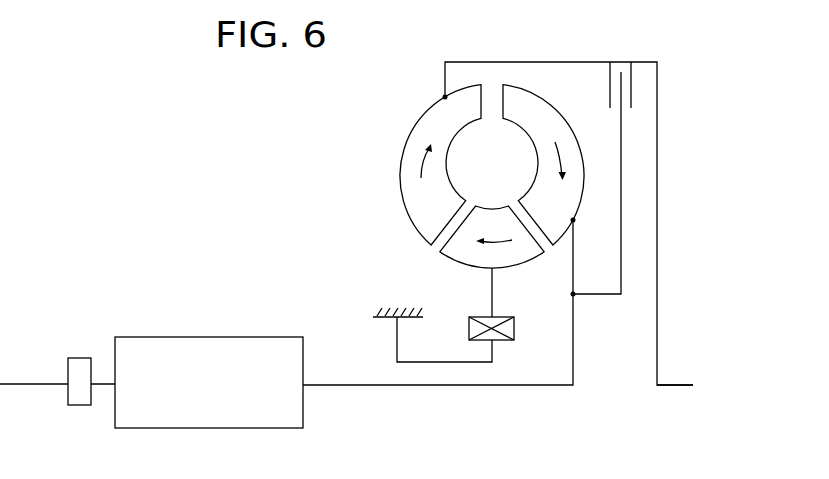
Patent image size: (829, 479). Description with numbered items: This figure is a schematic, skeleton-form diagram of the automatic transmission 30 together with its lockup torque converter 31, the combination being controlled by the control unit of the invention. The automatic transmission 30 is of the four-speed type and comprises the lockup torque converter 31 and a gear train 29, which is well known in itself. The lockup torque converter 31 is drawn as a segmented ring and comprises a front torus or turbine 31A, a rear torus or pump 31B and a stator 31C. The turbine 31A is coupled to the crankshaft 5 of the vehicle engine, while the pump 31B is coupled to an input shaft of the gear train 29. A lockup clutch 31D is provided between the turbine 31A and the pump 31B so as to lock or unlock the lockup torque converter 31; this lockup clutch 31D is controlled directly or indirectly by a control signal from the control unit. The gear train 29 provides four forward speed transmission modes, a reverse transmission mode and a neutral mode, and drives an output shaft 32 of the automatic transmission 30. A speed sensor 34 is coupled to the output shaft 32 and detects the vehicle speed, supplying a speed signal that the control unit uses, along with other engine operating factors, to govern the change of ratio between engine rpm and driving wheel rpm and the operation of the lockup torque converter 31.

The automatic transmission 30 is at (282, 173).
The lockup torque converter 31 is at (418, 97).
The turbine 31A is at (418, 152).
The pump 31B is at (557, 118).
The stator 31C is at (448, 249).
The lockup clutch 31D is at (629, 62).
The gear train 29 is at (230, 343).
The output shaft 32 is at (35, 385).
The speed sensor 34 is at (78, 406).
The crankshaft 5 is at (668, 387).